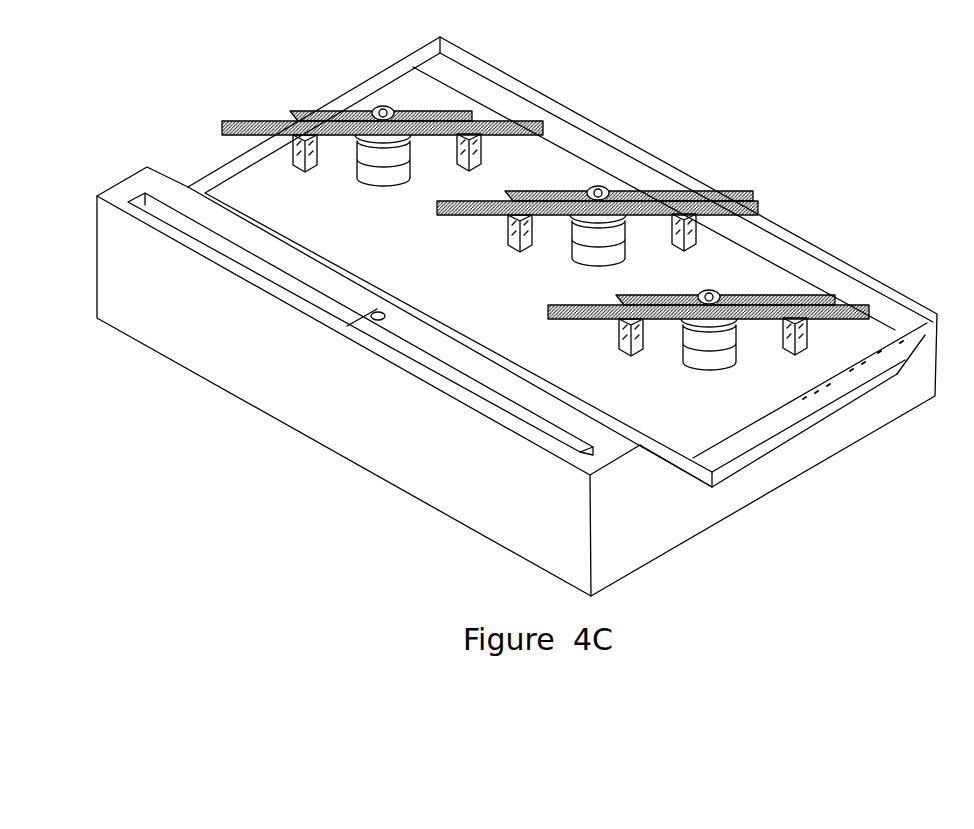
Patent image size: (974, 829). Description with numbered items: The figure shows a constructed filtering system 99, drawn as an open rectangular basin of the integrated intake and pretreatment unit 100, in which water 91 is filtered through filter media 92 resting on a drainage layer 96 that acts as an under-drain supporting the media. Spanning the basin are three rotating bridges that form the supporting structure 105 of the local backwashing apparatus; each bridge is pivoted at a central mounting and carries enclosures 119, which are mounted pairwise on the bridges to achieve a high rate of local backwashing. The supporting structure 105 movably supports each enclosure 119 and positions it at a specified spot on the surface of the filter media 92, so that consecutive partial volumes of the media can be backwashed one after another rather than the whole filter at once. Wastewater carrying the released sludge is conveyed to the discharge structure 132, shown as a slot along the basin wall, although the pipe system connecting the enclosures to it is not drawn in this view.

The heat treatment fixture 100 is at (138, 50).
The discharge structure 132 is at (153, 208).
The enclosure 119 is at (590, 142).
The supporting structure 105 is at (604, 188).
The filtering system 99 is at (745, 163).
The water 91 is at (867, 333).
The filter media 92 is at (858, 392).
The drainage layer 96 is at (742, 462).